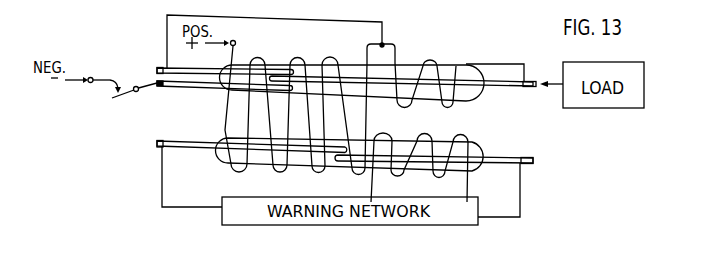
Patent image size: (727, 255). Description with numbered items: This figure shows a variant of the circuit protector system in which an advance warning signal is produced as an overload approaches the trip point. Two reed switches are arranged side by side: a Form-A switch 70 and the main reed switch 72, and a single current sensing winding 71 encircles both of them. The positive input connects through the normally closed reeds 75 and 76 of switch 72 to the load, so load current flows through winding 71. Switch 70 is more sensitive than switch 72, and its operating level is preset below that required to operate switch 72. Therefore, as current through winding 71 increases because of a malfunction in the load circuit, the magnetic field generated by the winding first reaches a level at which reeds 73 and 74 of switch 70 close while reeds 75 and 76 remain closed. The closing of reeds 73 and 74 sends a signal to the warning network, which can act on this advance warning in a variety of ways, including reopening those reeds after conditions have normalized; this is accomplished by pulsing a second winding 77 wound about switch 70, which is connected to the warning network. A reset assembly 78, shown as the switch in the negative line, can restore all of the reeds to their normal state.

The Form-A switch 70 is at (489, 144).
The current sensing winding 71 is at (302, 55).
The reed switch 72 is at (484, 100).
The reed 73 is at (535, 160).
The reed 74 is at (158, 148).
The reed 75 is at (162, 68).
The reed 76 is at (528, 82).
The winding 77 is at (443, 176).
The reset assembly 78 is at (136, 86).